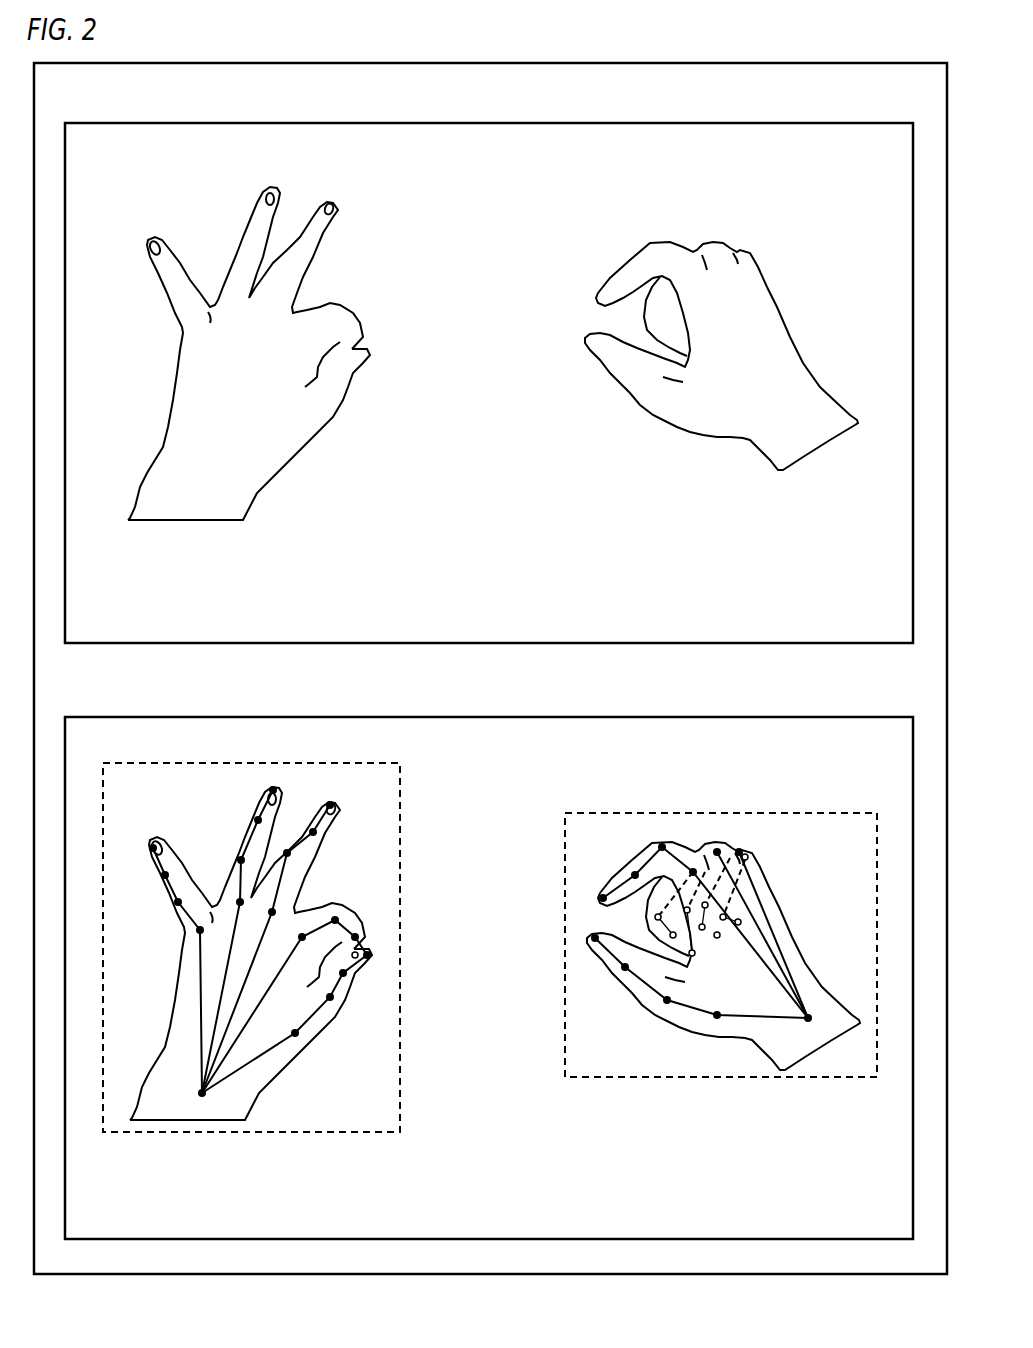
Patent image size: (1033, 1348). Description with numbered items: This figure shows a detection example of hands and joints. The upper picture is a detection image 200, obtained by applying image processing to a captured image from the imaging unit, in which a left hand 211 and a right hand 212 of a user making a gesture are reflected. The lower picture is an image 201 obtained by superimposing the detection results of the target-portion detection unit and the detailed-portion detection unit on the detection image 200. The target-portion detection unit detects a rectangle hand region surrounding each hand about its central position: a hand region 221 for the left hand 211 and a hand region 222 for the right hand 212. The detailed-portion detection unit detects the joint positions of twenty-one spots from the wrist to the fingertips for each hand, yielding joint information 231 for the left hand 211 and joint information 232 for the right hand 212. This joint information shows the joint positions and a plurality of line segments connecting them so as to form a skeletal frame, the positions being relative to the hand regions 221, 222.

The detection image 200 is at (820, 123).
The image 201 is at (820, 717).
The left hand 211 is at (170, 242).
The right hand 212 is at (768, 278).
The hand region 221 is at (400, 818).
The hand region 222 is at (790, 814).
The joint information 231 is at (270, 1053).
The joint information 232 is at (790, 960).